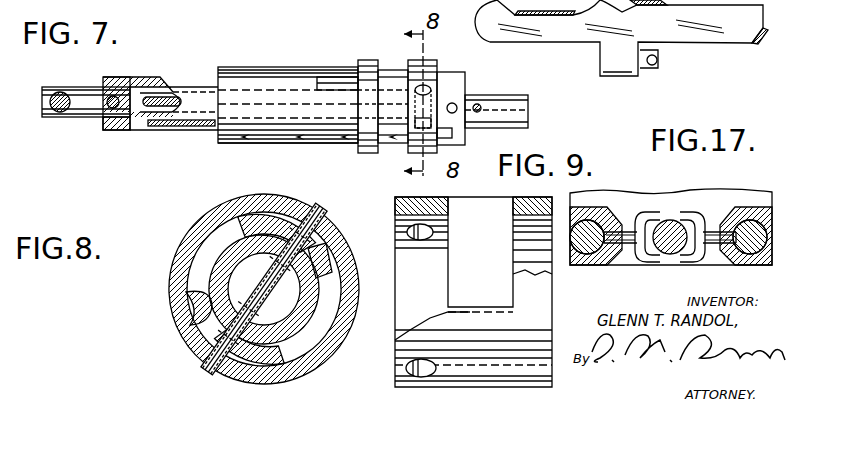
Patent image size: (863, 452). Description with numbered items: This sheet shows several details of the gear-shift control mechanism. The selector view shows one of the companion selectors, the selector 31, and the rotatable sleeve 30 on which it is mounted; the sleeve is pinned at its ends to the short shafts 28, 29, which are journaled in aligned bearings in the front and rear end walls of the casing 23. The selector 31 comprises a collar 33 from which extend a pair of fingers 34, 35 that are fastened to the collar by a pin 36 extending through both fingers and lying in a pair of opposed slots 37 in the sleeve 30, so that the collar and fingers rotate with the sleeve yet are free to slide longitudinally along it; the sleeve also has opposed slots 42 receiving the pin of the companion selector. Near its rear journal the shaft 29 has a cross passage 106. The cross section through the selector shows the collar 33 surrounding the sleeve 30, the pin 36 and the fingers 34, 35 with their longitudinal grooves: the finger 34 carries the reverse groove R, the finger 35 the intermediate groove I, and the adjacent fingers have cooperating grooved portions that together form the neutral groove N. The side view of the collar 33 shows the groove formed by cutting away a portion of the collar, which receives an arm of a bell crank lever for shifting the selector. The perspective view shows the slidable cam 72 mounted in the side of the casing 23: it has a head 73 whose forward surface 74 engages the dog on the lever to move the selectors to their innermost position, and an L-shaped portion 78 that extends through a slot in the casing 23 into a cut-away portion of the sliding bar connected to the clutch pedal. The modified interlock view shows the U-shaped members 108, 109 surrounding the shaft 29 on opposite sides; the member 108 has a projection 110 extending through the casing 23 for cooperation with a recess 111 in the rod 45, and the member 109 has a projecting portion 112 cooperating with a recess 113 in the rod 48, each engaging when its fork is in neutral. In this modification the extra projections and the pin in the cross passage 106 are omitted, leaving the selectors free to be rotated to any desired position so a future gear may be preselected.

In FIG. 7, the short shaft 28 is at (80, 100).
In FIG. 7, the short shaft 29 is at (510, 108).
In FIG. 17, the short shaft 29 is at (668, 256).
In FIG. 7, the sleeve 30 is at (133, 78).
In FIG. 7, the selector 31 is at (306, 62).
In FIG. 7, the collar 33 is at (370, 61).
In FIG. 8, the collar 33 is at (343, 262).
In FIG. 9, the collar 33 is at (522, 211).
In FIG. 7, the finger 34 is at (262, 90).
In FIG. 8, the finger 34 is at (253, 210).
In FIG. 7, the finger 35 is at (285, 138).
In FIG. 8, the finger 35 is at (178, 300).
In FIG. 8, the pin 36 is at (302, 222).
In FIG. 7, the opposed slots 37 is at (391, 157).
In FIG. 7, the opposed slots 42 is at (161, 106).
In FIG. 7, the cross passage 106 is at (545, 50).
In FIG. 14, the slidable cam 72 is at (648, 25).
In FIG. 14, the head 73 is at (505, 29).
In FIG. 14, the forward surface 74 is at (478, 15).
In FIG. 14, the L-shaped portion 78 is at (620, 58).
In FIG. 17, the casing 23 is at (762, 212).
In FIG. 17, the rod 45 is at (585, 254).
In FIG. 17, the rod 48 is at (742, 218).
In FIG. 17, the U-shaped member 108 is at (653, 213).
In FIG. 17, the U-shaped member 109 is at (688, 224).
In FIG. 17, the projection 110 is at (618, 258).
In FIG. 17, the recess 111 is at (614, 225).
In FIG. 17, the projecting portion 112 is at (726, 256).
In FIG. 17, the recess 113 is at (746, 254).
In FIG. 7, the longitudinal groove R is at (338, 82).
In FIG. 8, the longitudinal groove R is at (290, 206).
In FIG. 8, the longitudinal groove I is at (178, 330).
In FIG. 8, the groove N is at (345, 306).